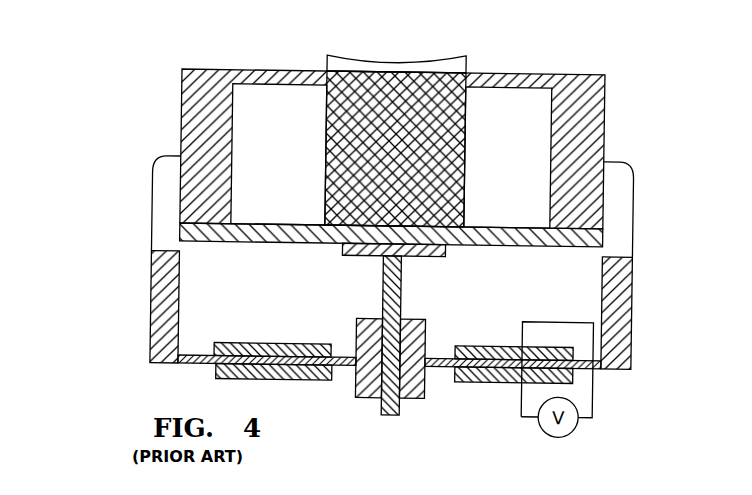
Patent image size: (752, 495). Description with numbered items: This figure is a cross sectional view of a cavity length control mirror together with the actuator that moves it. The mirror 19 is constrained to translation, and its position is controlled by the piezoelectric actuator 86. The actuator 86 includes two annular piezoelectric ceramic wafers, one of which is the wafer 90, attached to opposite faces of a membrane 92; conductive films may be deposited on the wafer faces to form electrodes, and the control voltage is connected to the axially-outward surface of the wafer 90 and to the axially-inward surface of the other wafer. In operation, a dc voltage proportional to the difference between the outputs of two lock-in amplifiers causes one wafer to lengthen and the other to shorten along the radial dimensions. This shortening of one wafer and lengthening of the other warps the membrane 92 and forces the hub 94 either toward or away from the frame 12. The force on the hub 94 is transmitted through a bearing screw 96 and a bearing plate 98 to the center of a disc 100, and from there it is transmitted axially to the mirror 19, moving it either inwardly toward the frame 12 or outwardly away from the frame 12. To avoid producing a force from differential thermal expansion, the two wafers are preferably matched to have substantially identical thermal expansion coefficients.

The frame 12 is at (218, 68).
The mirror 19 is at (408, 59).
The piezoelectric actuator 86 is at (127, 140).
The piezoelectric ceramic wafer 90 is at (504, 378).
The membrane 92 is at (504, 342).
The hub 94 is at (360, 385).
The bearing screw 96 is at (386, 272).
The bearing plate 98 is at (438, 253).
The disc 100 is at (314, 242).